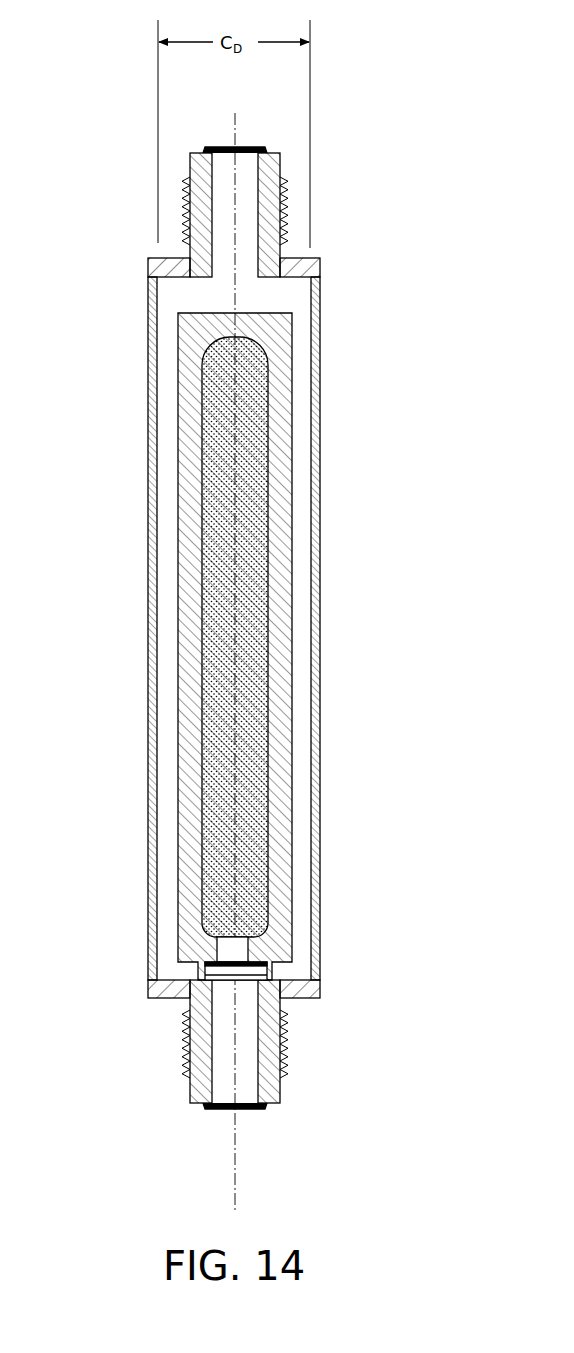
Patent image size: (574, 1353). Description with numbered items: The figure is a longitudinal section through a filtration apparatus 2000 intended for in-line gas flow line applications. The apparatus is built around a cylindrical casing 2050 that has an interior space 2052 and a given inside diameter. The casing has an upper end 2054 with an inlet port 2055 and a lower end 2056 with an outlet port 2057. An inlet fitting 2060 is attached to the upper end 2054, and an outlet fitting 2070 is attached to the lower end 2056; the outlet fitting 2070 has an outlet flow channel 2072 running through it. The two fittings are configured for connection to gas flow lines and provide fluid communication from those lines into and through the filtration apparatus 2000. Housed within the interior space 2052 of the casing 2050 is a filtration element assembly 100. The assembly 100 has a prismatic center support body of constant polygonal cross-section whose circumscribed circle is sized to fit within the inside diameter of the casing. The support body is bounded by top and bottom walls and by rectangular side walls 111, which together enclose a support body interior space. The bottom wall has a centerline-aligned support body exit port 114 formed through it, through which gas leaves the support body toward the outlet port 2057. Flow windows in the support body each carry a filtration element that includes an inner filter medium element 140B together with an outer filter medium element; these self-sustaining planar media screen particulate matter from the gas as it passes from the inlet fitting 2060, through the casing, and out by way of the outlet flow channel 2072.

The filtration apparatus 2000 is at (345, 197).
The cylindrical casing 2050 is at (148, 643).
The interior space 2052 is at (170, 312).
The upper end 2054 is at (148, 262).
The inlet port 2055 is at (244, 278).
The lower end 2056 is at (148, 990).
The outlet port 2057 is at (200, 972).
The inlet fitting 2060 is at (185, 176).
The outlet fitting 2070 is at (182, 1037).
The outlet flow channel 2072 is at (246, 150).
The filtration element assembly 100 is at (178, 552).
The side walls 111 is at (178, 728).
The support body exit port 114 is at (292, 906).
The inner filter medium element 140B is at (292, 757).